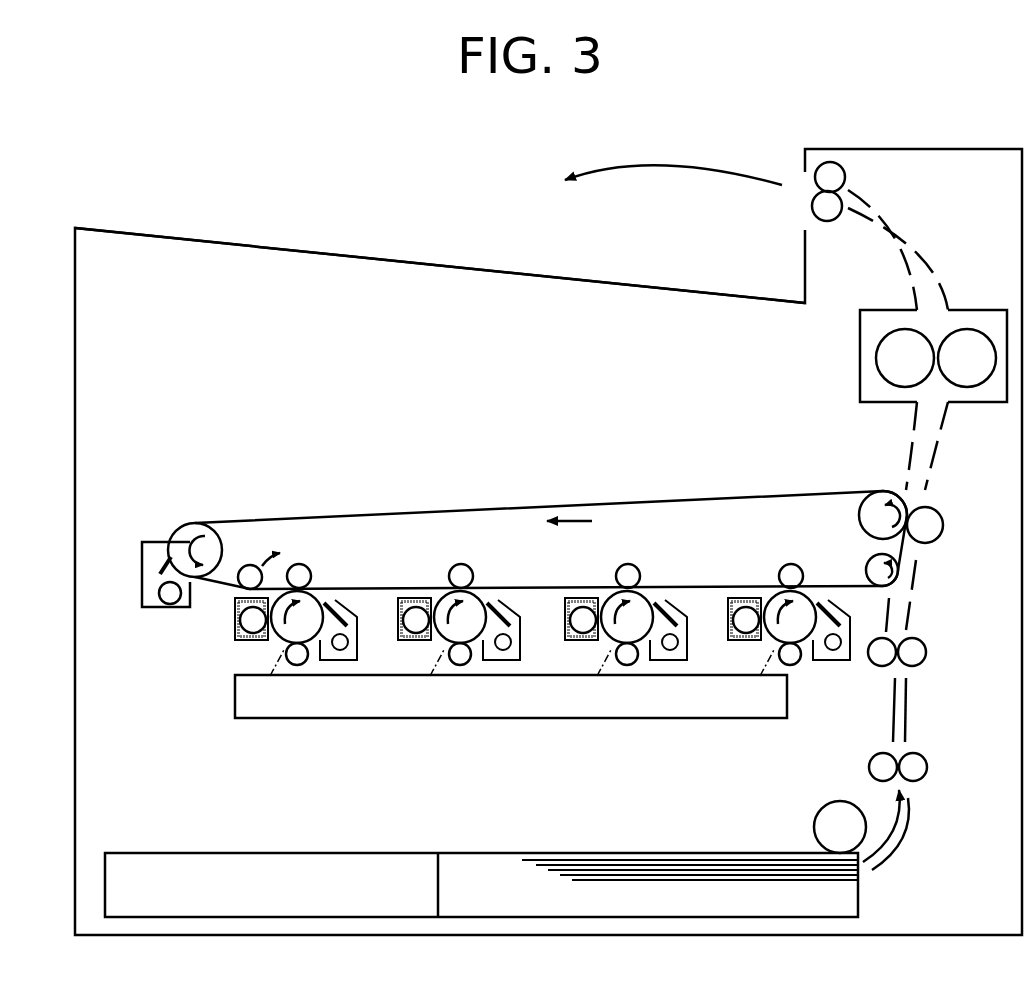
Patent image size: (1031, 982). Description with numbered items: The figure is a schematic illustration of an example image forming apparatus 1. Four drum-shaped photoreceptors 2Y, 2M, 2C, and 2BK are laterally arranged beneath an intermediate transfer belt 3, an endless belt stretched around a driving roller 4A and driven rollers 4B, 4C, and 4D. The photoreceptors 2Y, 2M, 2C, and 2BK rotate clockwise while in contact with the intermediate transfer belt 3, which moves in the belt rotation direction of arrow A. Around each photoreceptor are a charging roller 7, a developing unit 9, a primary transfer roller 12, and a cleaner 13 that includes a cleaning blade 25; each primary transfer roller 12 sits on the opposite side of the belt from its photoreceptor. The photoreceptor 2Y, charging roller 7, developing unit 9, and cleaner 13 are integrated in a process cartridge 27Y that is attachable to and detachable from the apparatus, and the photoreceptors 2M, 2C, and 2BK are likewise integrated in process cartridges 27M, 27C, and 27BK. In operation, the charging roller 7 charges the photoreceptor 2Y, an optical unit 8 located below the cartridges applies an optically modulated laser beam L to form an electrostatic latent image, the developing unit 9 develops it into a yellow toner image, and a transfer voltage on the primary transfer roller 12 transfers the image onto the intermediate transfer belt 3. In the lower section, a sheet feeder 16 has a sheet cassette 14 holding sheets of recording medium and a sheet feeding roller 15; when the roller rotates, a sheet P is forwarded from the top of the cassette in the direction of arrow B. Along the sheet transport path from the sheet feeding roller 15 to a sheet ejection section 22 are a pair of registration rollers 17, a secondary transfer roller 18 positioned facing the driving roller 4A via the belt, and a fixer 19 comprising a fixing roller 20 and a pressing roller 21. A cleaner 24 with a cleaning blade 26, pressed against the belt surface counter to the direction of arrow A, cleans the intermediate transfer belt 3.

The image forming apparatus 1 is at (302, 226).
The sheet ejection section 22 is at (507, 273).
The fixer 19 is at (860, 362).
The fixing roller 20 is at (903, 329).
The pressing roller 21 is at (970, 329).
The intermediate transfer belt 3 is at (702, 500).
The driving roller 4A is at (861, 505).
The driven roller 4B is at (197, 534).
The driven roller 4C is at (247, 565).
The driven roller 4D is at (866, 570).
The secondary transfer roller 18 is at (944, 525).
The pair of registration rollers 17 is at (927, 652).
The sheet feeding roller 15 is at (828, 805).
The sheet cassette 14 is at (105, 883).
The sheet feeder 16 is at (358, 843).
The sheet P is at (575, 853).
The arrow B is at (901, 822).
The arrow A is at (569, 537).
The cleaner 24 is at (163, 557).
The cleaning blade 26 is at (157, 566).
The photoreceptor 2Y is at (310, 591).
The photoreceptor 2M is at (486, 591).
The photoreceptor 2C is at (651, 591).
The photoreceptor 2BK is at (760, 591).
The primary transfer roller 12 is at (296, 564).
The cleaner 13 is at (335, 604).
The cleaning blade 25 is at (352, 612).
The developing unit 9 is at (235, 631).
The charging roller 7 is at (294, 665).
The optical unit 8 is at (235, 701).
The laser beam L is at (272, 671).
The process cartridge 27Y is at (218, 615).
The process cartridge 27M is at (431, 655).
The process cartridge 27C is at (598, 655).
The process cartridge 27BK is at (762, 655).